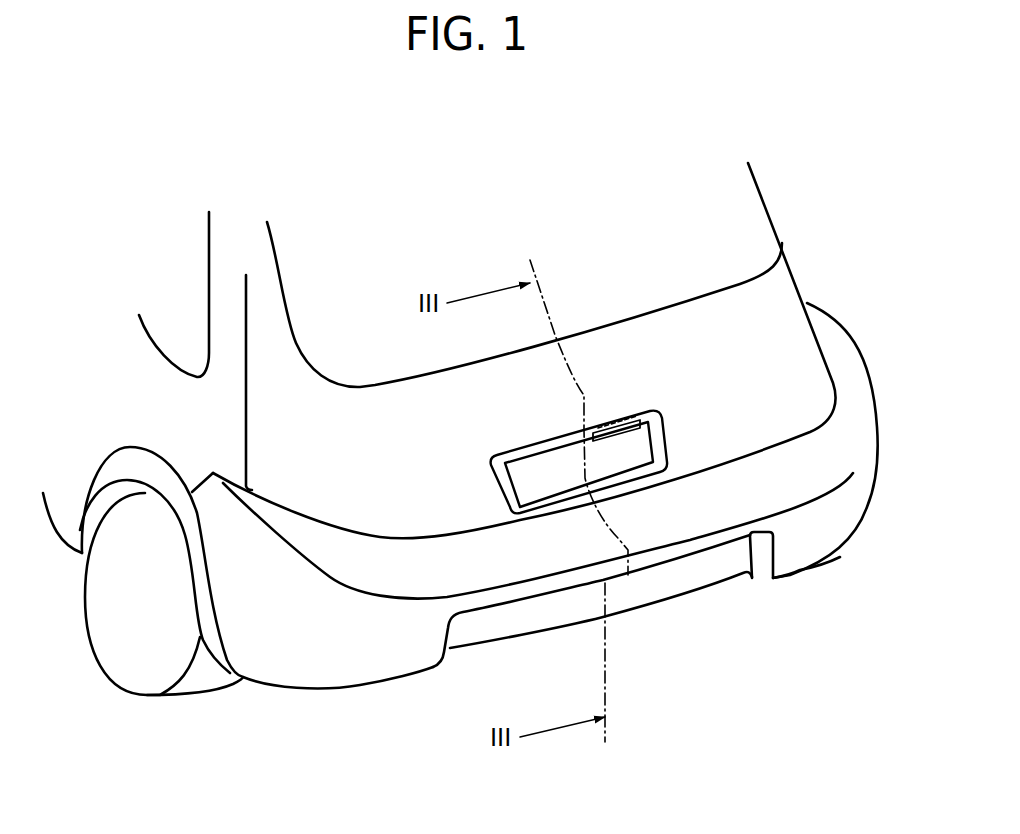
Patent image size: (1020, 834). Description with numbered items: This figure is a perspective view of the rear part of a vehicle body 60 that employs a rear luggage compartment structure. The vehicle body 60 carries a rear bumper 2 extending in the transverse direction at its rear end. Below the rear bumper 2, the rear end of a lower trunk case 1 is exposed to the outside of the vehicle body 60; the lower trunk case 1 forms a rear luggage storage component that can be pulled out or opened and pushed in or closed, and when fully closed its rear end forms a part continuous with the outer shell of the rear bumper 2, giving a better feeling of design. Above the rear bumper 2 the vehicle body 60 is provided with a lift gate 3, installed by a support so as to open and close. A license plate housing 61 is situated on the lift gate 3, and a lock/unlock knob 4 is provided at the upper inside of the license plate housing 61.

The lower trunk case 1 is at (725, 572).
The rear bumper 2 is at (847, 522).
The lift gate 3 is at (792, 300).
The lock/unlock knob 4 is at (625, 420).
The vehicle body 60 is at (778, 203).
The license plate housing 61 is at (507, 452).